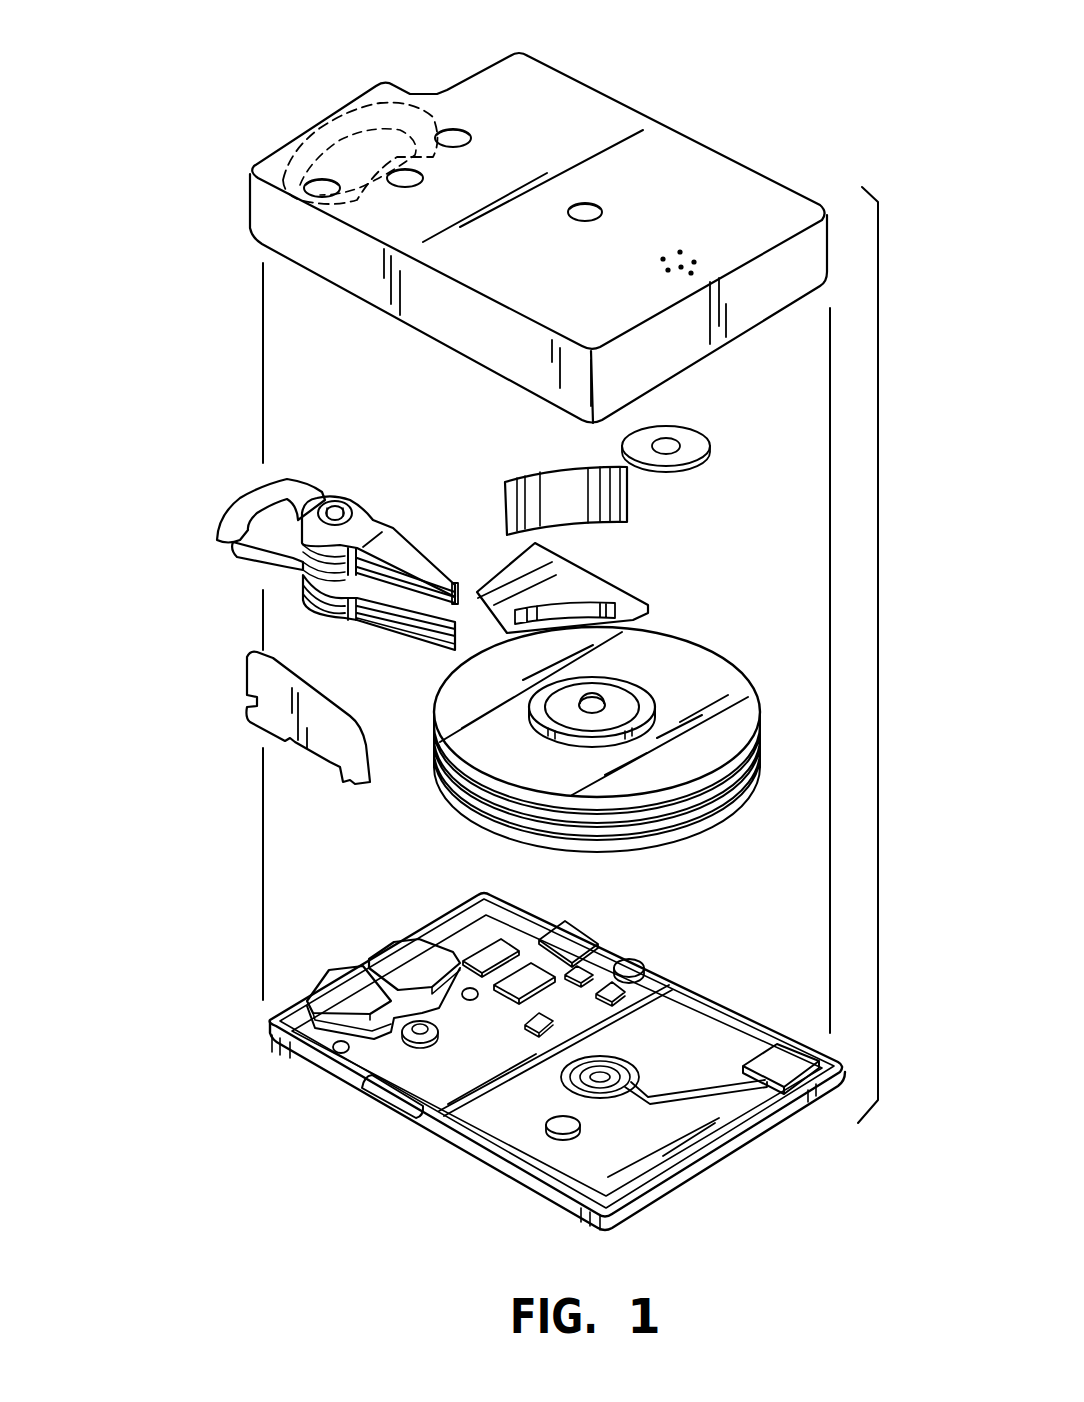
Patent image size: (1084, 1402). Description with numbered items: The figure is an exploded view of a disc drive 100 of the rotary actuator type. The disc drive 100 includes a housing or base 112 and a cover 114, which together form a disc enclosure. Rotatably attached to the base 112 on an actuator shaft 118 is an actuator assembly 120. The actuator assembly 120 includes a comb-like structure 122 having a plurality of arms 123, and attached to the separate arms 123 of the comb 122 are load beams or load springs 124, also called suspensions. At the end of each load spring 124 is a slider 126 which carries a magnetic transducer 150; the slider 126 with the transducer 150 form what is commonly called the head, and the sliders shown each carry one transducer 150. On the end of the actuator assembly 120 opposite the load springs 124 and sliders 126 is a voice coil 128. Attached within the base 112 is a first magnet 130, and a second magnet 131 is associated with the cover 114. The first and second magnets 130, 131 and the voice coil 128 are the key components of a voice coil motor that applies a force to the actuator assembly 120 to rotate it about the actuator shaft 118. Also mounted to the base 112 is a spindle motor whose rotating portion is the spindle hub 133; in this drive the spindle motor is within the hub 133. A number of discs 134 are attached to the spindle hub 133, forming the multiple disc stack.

The disc drive 100 is at (735, 73).
The base 112 is at (727, 1032).
The cover 114 is at (708, 173).
The actuator shaft 118 is at (340, 508).
The actuator assembly 120 is at (283, 563).
The comb-like structure 122 is at (357, 617).
The arms 123 is at (393, 523).
The load springs 124 is at (408, 557).
The slider 126 is at (460, 587).
The voice coil 128 is at (240, 510).
The first magnet 130 is at (332, 990).
The second magnet 131 is at (362, 108).
The spindle hub 133 is at (600, 700).
The discs 134 is at (723, 680).
The magnetic transducer 150 is at (477, 587).